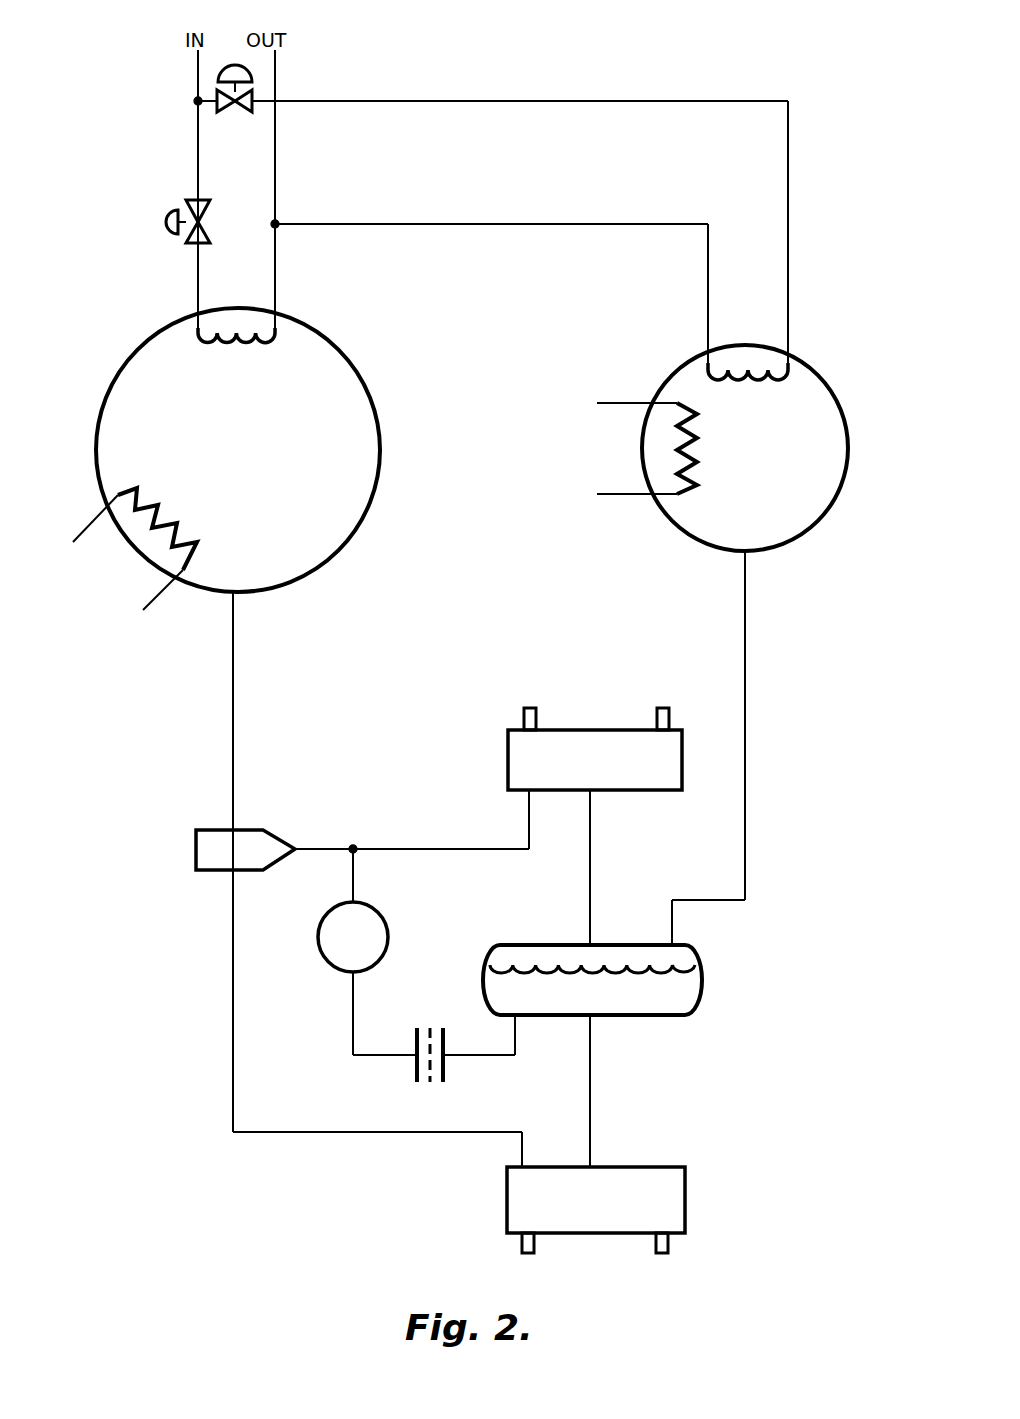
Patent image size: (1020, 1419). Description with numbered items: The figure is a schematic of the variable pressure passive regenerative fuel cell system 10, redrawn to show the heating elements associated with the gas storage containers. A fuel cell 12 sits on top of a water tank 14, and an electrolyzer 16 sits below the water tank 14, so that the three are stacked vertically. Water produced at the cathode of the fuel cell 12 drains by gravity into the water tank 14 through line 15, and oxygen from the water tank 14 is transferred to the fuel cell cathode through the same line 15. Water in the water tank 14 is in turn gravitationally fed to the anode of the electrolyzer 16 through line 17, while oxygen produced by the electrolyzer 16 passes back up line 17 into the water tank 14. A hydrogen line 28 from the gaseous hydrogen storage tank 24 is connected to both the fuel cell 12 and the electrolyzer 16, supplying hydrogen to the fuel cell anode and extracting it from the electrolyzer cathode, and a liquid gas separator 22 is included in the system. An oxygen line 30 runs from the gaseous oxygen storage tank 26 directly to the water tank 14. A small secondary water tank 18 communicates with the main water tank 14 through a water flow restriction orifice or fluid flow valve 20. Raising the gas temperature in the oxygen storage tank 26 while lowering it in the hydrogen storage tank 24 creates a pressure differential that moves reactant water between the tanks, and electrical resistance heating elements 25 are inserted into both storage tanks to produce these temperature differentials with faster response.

The variable pressure passive regenerative fuel cell system 10 is at (513, 82).
The fuel cell 12 is at (622, 730).
The water tank 14 is at (703, 986).
The line 15 is at (590, 856).
The electrolyzer 16 is at (653, 1167).
The line 17 is at (591, 1085).
The secondary water tank 18 is at (383, 915).
The fluid flow valve 20 is at (444, 1068).
The liquid gas separator 22 is at (257, 830).
The hydrogen storage tank 24 is at (320, 332).
The electrical resistance heating elements 25 is at (642, 402).
The oxygen storage tank 26 is at (822, 378).
The hydrogen line 28 is at (233, 676).
The oxygen line 30 is at (746, 670).